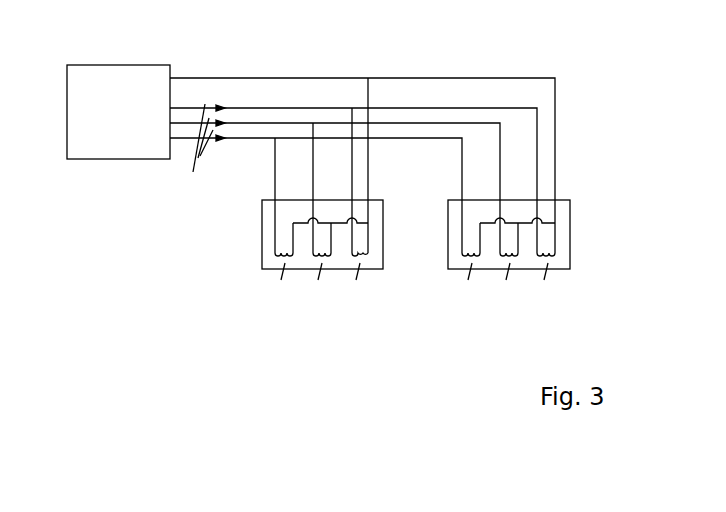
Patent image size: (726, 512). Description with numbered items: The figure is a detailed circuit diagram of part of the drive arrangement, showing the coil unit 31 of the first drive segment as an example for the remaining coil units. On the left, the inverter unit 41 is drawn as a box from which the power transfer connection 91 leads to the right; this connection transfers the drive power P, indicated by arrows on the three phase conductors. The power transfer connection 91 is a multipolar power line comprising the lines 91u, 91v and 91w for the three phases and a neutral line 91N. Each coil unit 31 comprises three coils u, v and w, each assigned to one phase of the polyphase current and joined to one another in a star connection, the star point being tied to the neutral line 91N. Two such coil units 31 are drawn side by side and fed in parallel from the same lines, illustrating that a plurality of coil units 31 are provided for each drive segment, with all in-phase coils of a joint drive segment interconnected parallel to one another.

The inverter unit 41 is at (116, 125).
The power transfer connection 91 is at (355, 54).
The neutral line 91N is at (301, 77).
The line for phase u 91u is at (275, 167).
The line for phase v 91v is at (313, 156).
The line for phase w 91w is at (352, 148).
The electrical drive power P is at (203, 138).
The coil unit 31 is at (384, 240).